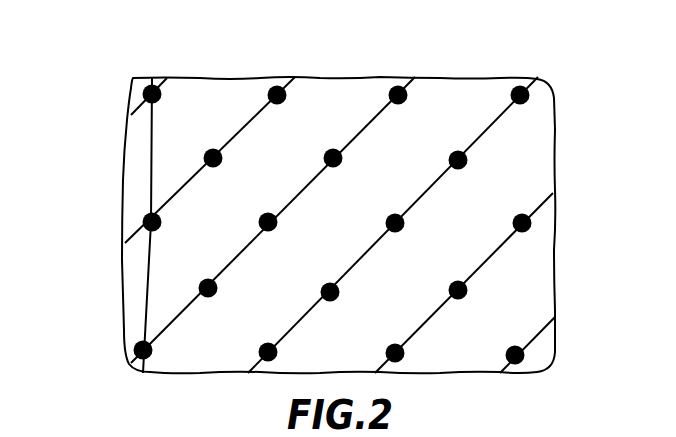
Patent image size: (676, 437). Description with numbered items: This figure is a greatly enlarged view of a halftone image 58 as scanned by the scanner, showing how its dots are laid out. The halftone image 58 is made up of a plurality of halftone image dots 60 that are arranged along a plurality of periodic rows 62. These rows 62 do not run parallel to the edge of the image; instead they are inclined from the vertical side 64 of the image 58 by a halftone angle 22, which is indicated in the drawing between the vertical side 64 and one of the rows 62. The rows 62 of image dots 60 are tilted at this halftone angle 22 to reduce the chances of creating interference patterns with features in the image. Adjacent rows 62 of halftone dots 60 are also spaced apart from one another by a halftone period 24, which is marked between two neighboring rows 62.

The halftone image 58 is at (128, 82).
The vertical side 64 is at (148, 140).
The halftone angle 22 is at (207, 203).
The halftone period 24 is at (425, 188).
The rows 62 is at (237, 259).
The halftone image dots 60 is at (340, 288).